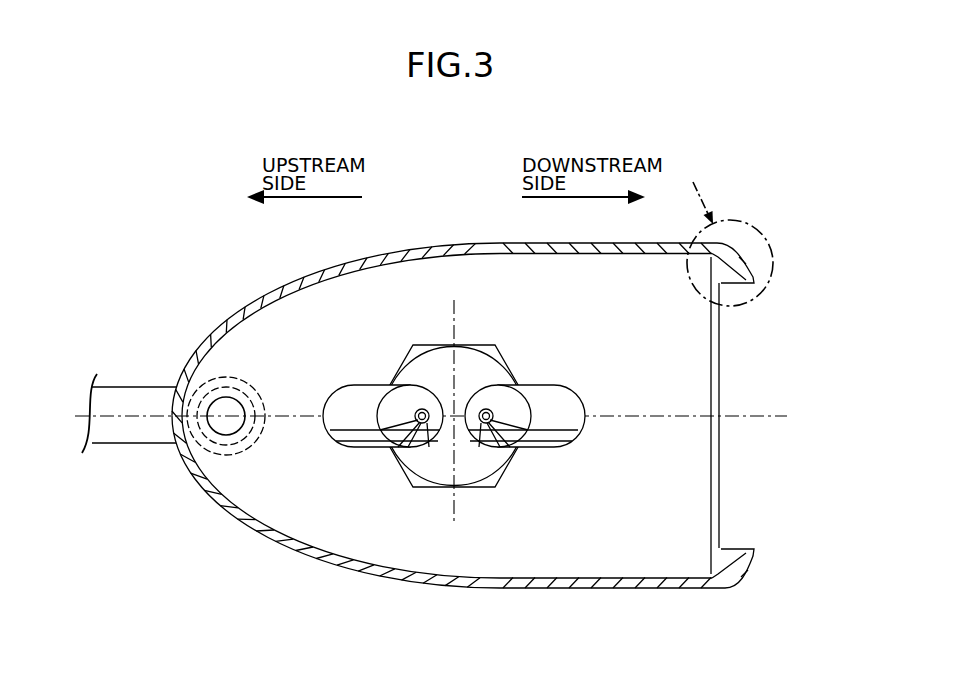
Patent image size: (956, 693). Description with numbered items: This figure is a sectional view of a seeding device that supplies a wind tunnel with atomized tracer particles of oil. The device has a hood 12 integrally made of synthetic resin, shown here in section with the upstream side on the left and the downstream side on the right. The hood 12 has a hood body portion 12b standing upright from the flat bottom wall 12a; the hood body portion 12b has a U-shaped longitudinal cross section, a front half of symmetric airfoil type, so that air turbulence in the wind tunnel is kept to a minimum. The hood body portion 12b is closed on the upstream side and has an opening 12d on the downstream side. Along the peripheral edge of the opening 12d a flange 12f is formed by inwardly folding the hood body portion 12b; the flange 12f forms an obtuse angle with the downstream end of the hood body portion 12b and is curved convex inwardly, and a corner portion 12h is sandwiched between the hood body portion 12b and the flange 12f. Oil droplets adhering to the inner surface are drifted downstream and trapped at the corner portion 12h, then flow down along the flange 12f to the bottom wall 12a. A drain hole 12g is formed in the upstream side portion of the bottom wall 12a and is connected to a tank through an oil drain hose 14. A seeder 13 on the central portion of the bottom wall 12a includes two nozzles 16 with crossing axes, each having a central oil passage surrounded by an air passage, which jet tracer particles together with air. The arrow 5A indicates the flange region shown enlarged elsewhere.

The hood 12 is at (479, 234).
The bottom wall 12a is at (584, 552).
The hood body portion 12b is at (375, 262).
The opening 12d is at (717, 440).
The flange 12f is at (746, 270).
The drain hole 12g is at (242, 408).
The corner portion 12h is at (707, 265).
The seeder 13 is at (529, 361).
The oil drain hose 14 is at (136, 395).
The nozzle 16 is at (362, 438).
The arrow 5A is at (727, 225).